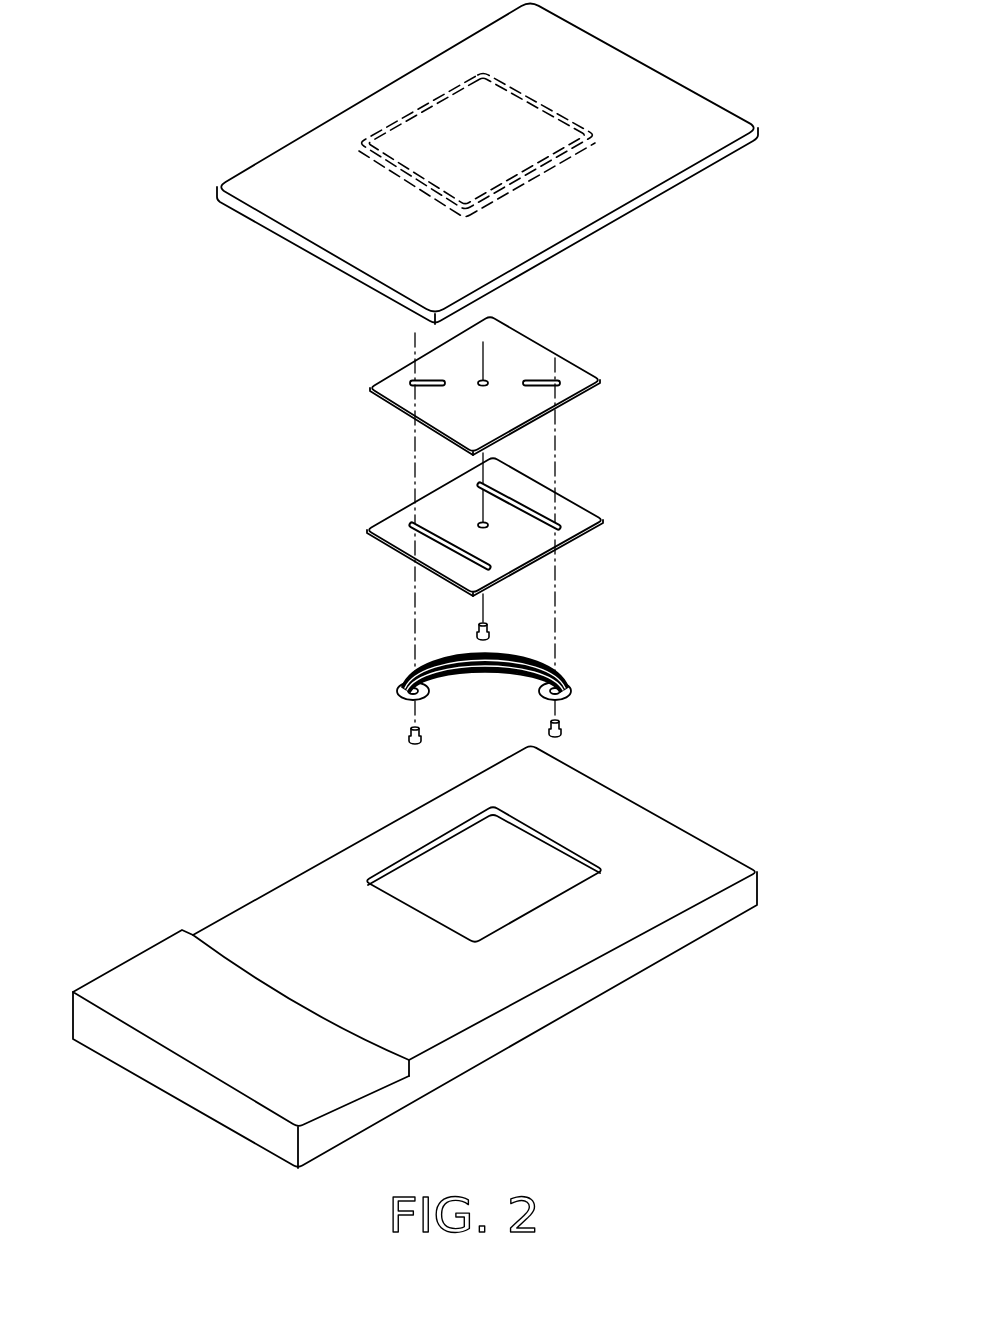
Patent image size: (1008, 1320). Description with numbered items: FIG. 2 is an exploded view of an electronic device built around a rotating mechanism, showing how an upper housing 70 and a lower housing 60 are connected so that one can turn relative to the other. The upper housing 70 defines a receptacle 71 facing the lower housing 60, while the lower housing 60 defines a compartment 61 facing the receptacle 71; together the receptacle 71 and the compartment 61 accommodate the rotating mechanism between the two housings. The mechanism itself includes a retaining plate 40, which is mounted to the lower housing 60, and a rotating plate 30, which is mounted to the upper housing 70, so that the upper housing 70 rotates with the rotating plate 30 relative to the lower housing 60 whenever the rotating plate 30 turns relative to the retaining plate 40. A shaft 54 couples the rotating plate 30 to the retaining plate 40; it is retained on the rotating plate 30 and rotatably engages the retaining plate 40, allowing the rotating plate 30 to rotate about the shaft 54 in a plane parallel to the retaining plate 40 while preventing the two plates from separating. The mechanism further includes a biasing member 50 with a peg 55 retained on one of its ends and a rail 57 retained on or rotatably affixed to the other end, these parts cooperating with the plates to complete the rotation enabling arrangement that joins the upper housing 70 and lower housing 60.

The rotating plate 30 is at (530, 352).
The retaining plate 40 is at (562, 507).
The biasing member 50 is at (565, 681).
The shaft 54 is at (489, 632).
The peg 55 is at (560, 729).
The rail 57 is at (409, 736).
The lower housing 60 is at (710, 833).
The compartment 61 is at (543, 872).
The upper housing 70 is at (710, 81).
The receptacle 71 is at (533, 122).